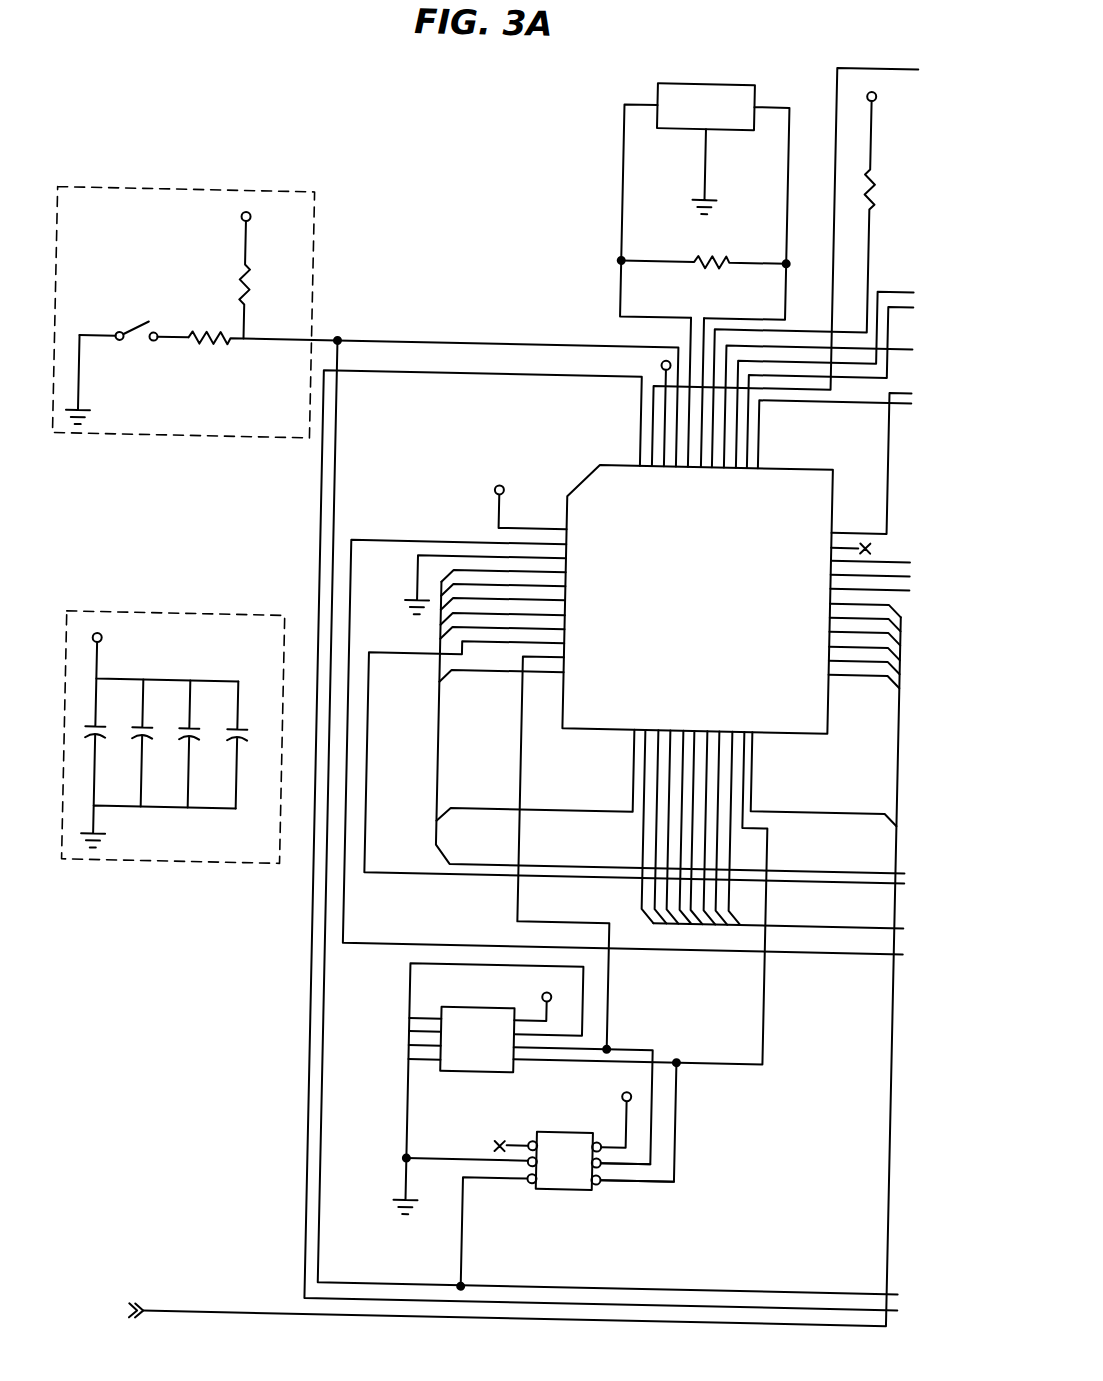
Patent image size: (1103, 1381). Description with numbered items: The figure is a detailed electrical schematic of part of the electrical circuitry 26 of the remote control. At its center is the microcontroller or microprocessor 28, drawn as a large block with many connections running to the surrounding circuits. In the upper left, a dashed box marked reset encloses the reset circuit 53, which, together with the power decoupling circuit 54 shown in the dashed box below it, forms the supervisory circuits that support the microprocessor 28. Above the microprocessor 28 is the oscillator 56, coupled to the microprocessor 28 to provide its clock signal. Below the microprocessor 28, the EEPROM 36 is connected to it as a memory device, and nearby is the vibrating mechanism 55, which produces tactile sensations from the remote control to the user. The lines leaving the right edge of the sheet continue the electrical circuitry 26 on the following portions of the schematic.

The electrical circuitry 26 is at (516, 252).
The microcontroller or microprocessor 28 is at (587, 473).
The EEPROM 36 is at (487, 1077).
The reset circuit 53 is at (281, 195).
The power decoupling circuit 54 is at (192, 870).
The vibrating mechanism 55 is at (566, 1192).
The oscillator 56 is at (752, 80).